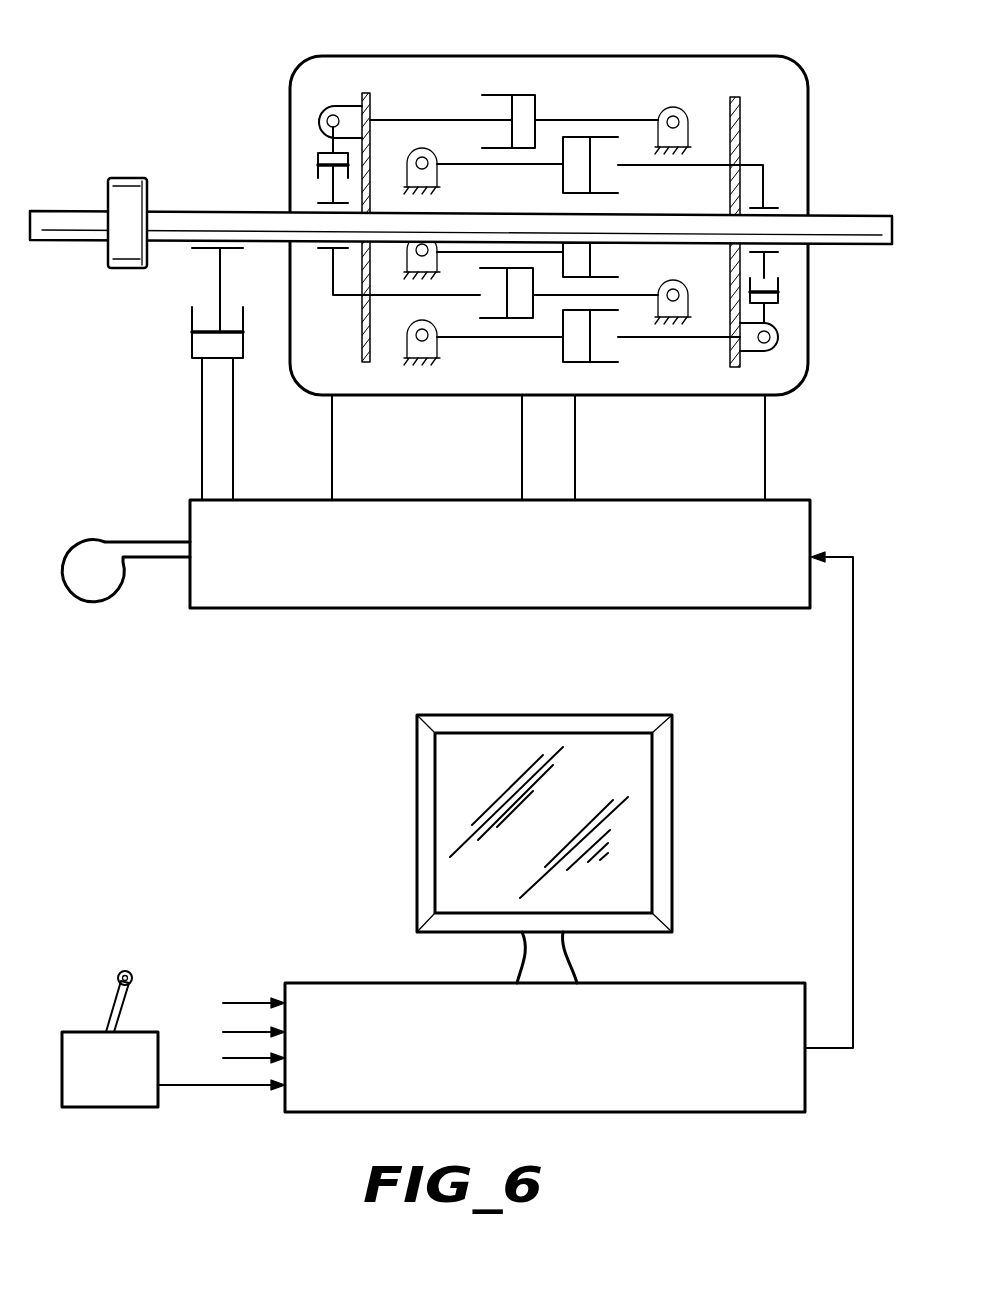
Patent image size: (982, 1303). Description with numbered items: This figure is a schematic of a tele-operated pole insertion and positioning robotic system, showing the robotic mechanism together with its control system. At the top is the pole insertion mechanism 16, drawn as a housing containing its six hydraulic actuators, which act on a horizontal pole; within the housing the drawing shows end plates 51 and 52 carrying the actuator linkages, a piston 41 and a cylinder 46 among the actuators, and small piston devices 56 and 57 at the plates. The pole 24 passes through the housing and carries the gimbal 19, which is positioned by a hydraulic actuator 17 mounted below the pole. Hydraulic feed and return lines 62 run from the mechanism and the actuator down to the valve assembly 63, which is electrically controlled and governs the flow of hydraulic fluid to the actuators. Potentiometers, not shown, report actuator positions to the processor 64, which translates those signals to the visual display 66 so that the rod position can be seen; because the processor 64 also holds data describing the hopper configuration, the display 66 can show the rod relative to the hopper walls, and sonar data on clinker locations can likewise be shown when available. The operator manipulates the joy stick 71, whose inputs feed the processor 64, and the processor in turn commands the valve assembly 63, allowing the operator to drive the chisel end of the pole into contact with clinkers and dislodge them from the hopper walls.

The pole insertion mechanism 16 is at (662, 50).
The shaft 24 is at (68, 212).
The gimbal 19 is at (112, 270).
The hydraulic actuator 17 is at (192, 345).
The hydraulic feed and return lines 62 is at (200, 436).
The valve assembly 63 is at (370, 608).
The visual display 66 is at (417, 790).
The processor 64 is at (370, 983).
The joy stick 71 is at (112, 1000).
The left plate 51 is at (363, 97).
The right plate 52 is at (738, 146).
The piston 41 is at (516, 94).
The cylinder 46 is at (576, 136).
The piston device 56 is at (318, 160).
The piston device 57 is at (778, 292).